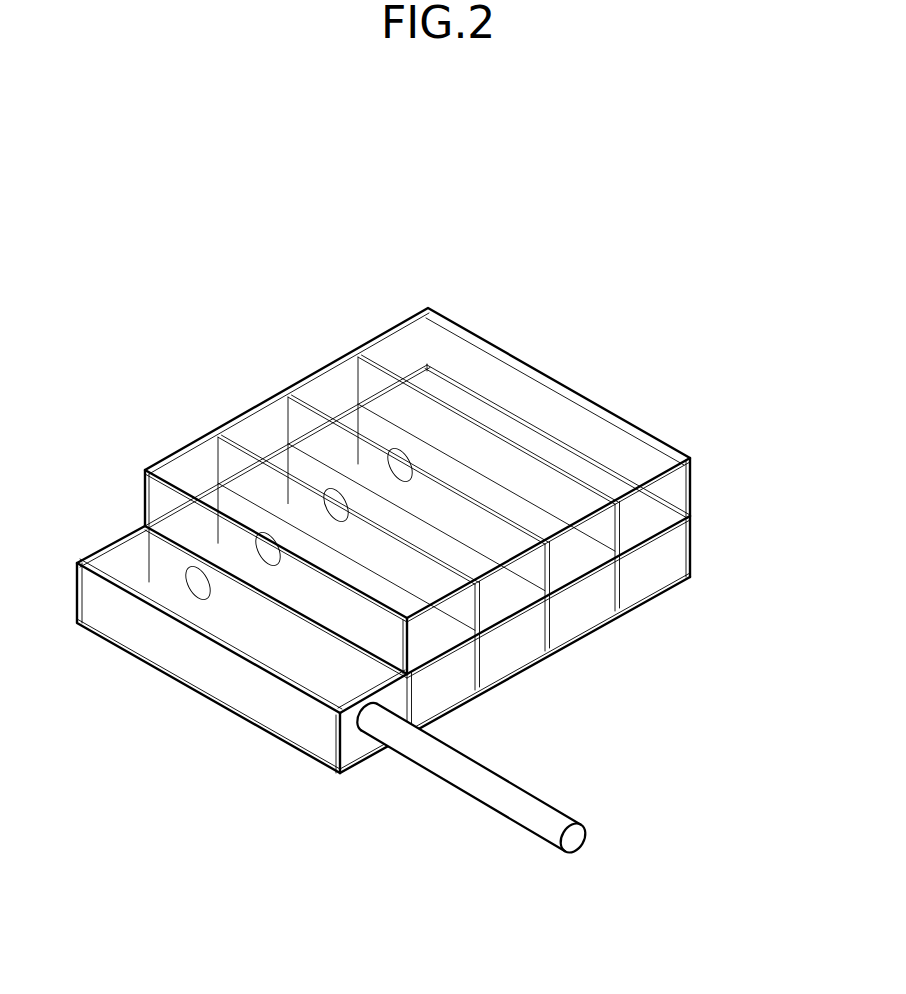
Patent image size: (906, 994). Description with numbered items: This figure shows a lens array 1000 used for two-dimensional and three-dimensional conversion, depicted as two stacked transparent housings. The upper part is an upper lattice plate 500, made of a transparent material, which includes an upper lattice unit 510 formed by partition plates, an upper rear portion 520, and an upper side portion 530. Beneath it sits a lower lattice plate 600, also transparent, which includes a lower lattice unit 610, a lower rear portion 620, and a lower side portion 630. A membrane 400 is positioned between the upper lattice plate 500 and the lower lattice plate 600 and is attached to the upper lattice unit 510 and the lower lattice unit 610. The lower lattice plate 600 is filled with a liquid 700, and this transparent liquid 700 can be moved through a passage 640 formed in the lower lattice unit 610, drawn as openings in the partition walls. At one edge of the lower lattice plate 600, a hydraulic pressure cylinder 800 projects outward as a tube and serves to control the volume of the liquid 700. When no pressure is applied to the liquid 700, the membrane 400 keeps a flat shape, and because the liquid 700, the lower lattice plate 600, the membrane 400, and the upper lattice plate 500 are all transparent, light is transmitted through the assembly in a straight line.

The lens array 1000 is at (437, 557).
The membrane 400 is at (417, 503).
The upper lattice plate 500 is at (413, 495).
The upper lattice unit 510 is at (311, 530).
The upper rear portion 520 is at (417, 495).
The upper side portion 530 is at (417, 491).
The lower lattice plate 600 is at (437, 608).
The lower lattice unit 610 is at (581, 654).
The lower rear portion 620 is at (416, 649).
The lower side portion 630 is at (548, 614).
The passage 640 is at (238, 523).
The liquid 700 is at (515, 675).
The hydraulic pressure cylinder 800 is at (473, 783).